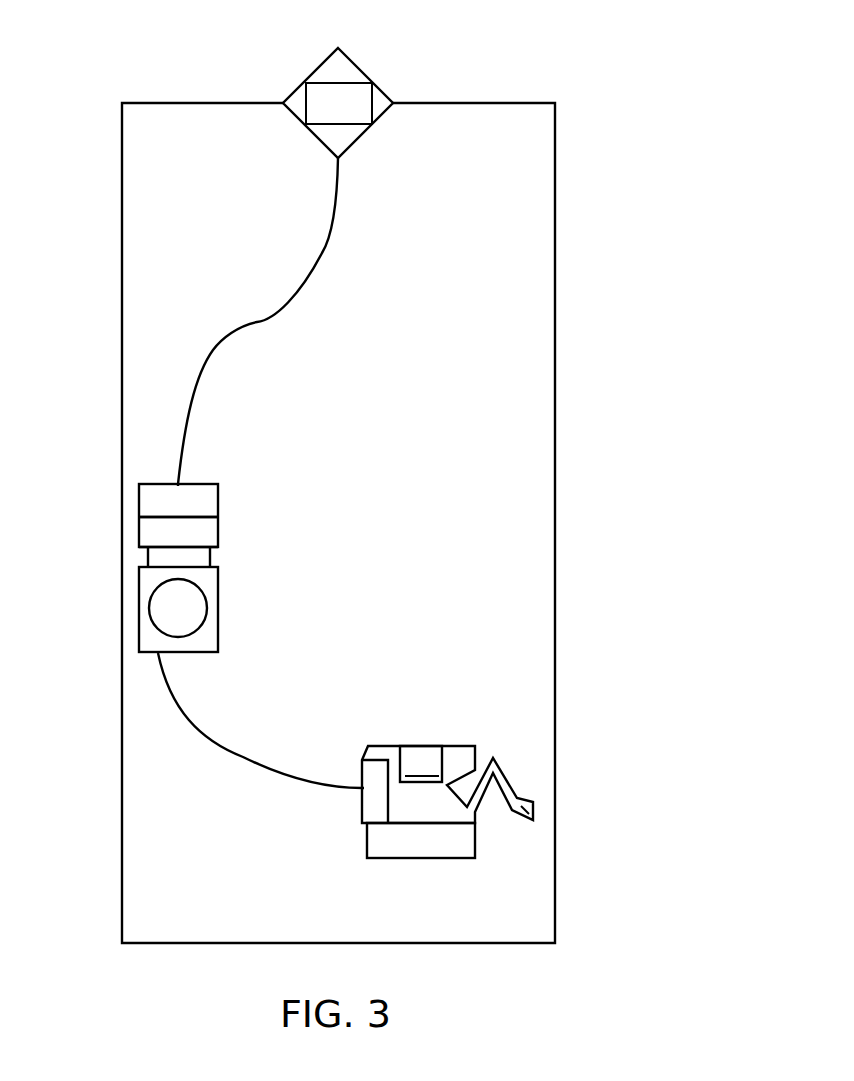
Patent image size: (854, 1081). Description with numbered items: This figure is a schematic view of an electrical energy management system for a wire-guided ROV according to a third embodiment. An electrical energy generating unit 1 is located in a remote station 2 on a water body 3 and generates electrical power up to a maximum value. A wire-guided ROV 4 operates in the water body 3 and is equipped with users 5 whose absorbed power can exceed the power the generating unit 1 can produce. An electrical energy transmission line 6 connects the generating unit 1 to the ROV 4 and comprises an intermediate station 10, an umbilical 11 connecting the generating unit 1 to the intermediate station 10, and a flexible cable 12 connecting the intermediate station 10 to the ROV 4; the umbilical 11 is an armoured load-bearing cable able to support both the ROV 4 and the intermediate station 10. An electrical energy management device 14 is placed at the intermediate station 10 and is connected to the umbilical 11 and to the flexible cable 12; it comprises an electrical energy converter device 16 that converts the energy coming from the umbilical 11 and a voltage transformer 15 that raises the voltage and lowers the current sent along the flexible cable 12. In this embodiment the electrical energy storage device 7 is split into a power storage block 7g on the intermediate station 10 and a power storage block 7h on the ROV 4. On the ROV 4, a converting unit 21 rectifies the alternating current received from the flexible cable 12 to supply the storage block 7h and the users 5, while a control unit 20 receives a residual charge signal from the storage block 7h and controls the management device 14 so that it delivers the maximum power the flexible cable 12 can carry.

The electrical energy generating unit 1 is at (350, 100).
The remote station 2 is at (284, 61).
The water body 3 is at (528, 322).
The wire-guided ROV 4 is at (432, 780).
The users 5 is at (522, 836).
The electrical energy transmission line 6 is at (328, 449).
The electrical energy storage device 7 is at (239, 466).
The power storage block 7g is at (158, 532).
The power storage block 7h is at (390, 843).
The intermediate station 10 is at (214, 568).
The umbilical 11 is at (323, 253).
The flexible cable 12 is at (242, 758).
The electrical energy management device 14 is at (243, 529).
The voltage transformer 15 is at (200, 558).
The electrical energy converter device 16 is at (198, 503).
The control unit 20 is at (421, 764).
The converting unit 21 is at (368, 770).